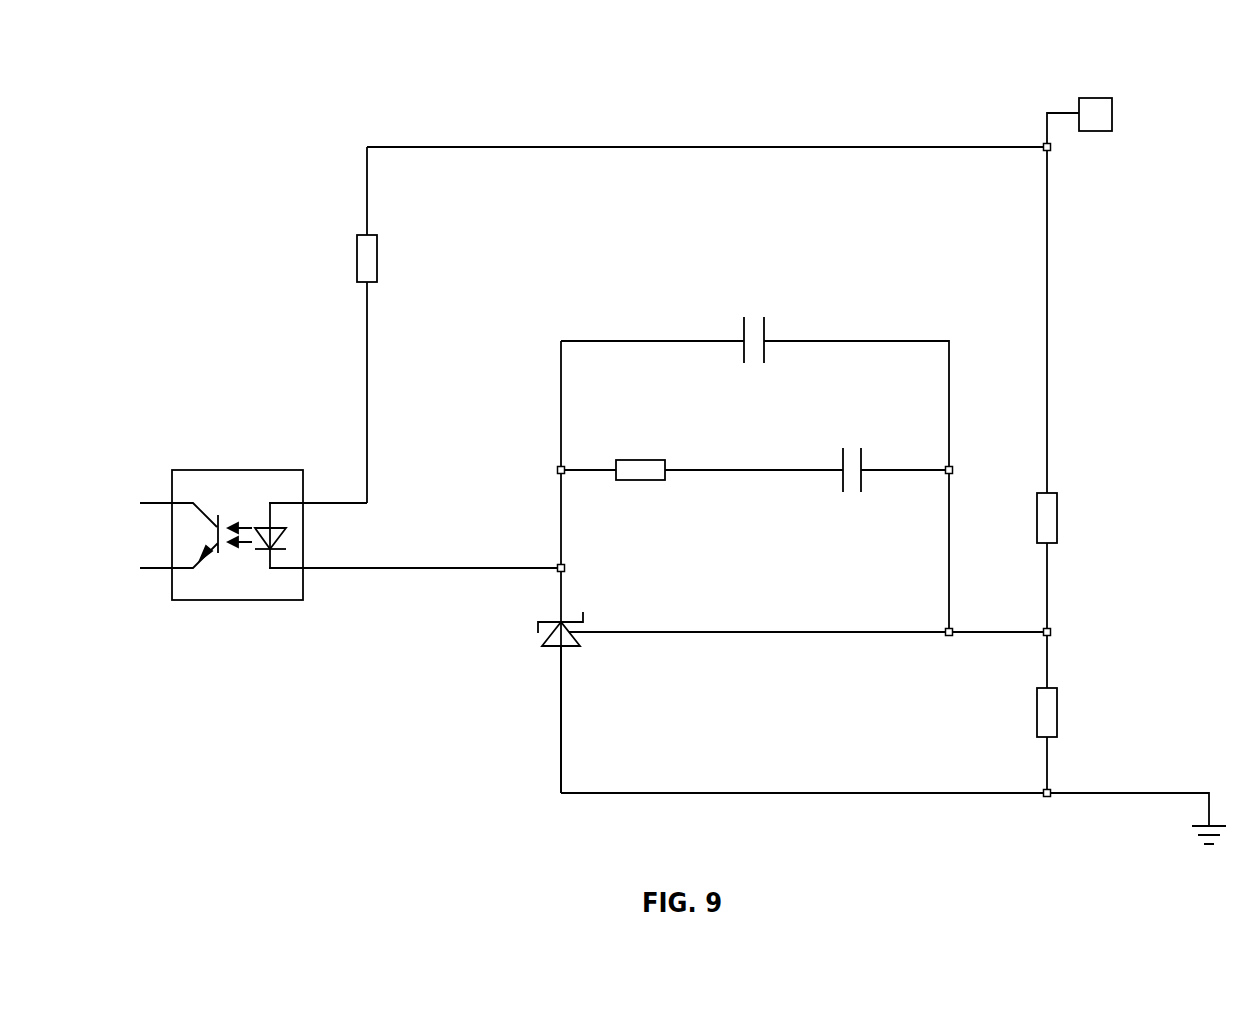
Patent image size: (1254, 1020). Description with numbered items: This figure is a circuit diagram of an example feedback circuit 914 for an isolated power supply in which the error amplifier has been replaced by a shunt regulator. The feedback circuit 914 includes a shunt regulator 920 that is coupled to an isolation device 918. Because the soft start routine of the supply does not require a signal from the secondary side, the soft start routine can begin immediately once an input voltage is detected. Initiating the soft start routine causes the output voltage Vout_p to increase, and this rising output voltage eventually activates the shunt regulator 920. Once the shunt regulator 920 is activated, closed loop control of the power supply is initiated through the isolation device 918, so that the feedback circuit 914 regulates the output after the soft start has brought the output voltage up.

The feedback circuit 914 is at (659, 454).
The isolation device 918 is at (172, 478).
The shunt regulator 920 is at (565, 648).